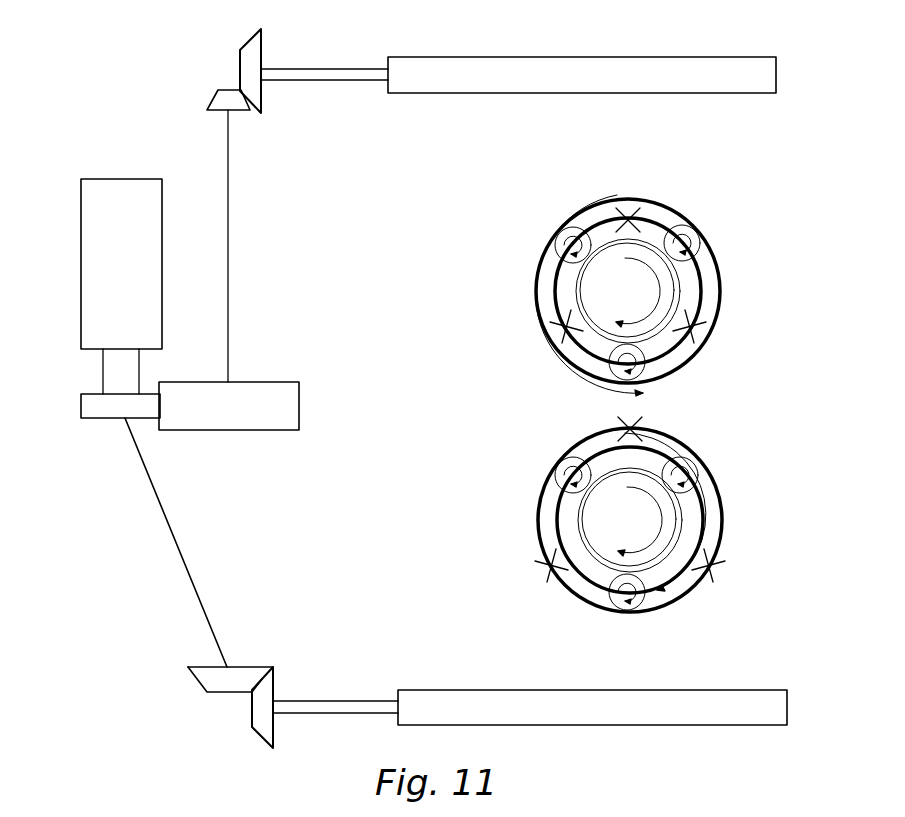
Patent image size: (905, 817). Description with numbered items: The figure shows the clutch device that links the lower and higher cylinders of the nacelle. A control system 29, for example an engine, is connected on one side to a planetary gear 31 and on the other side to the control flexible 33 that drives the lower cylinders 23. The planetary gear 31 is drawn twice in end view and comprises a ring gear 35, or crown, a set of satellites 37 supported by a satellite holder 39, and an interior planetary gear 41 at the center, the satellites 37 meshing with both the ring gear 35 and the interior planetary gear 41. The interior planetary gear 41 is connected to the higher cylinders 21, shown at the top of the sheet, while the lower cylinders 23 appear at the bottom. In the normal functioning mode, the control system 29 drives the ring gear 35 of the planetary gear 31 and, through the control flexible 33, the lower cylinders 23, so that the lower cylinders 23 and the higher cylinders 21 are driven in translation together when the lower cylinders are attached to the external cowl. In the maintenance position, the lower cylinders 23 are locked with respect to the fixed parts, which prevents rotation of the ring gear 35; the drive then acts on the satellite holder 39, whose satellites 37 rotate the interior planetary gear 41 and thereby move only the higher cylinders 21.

The higher cylinders 21 is at (547, 76).
The lower cylinders 23 is at (555, 703).
The control system 29 is at (117, 202).
The planetary gear 31 is at (243, 403).
The control flexible 33 is at (172, 532).
The ring gear 35 is at (674, 214).
The satellites 37 is at (552, 262).
The satellite holder 39 is at (550, 294).
The interior planetary gear 41 is at (683, 290).